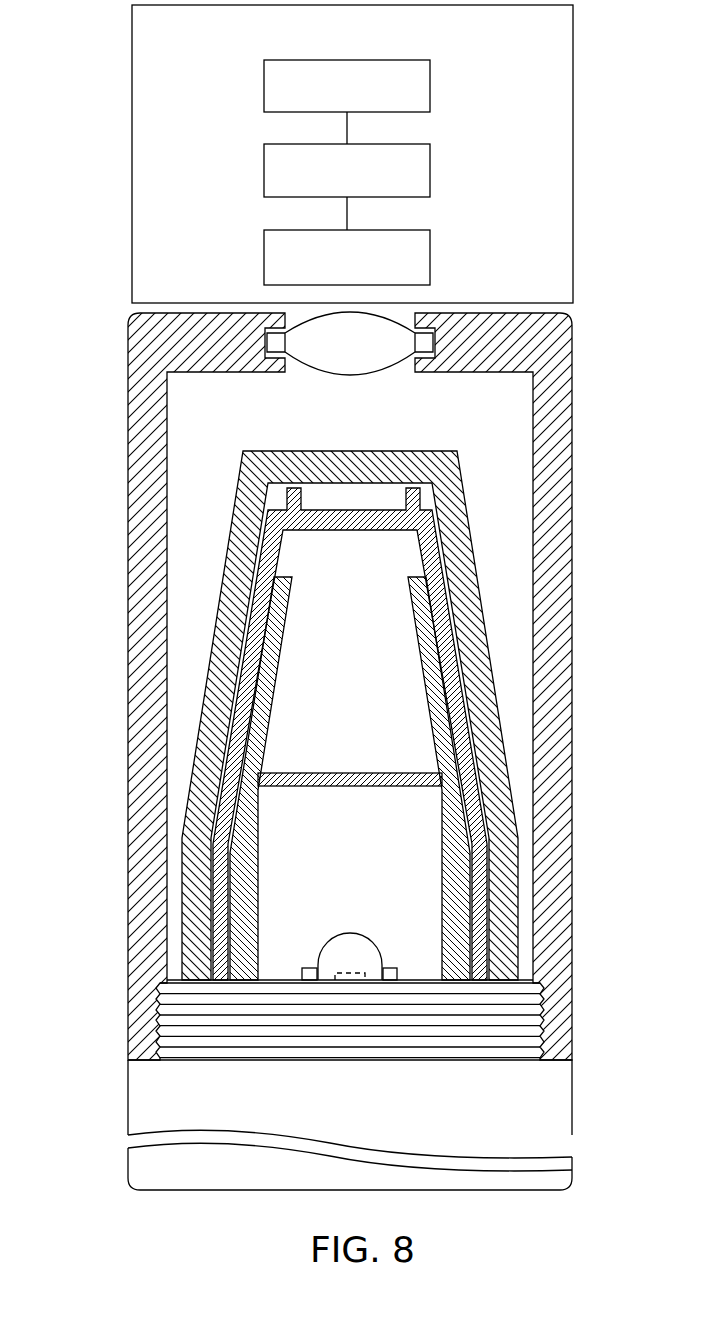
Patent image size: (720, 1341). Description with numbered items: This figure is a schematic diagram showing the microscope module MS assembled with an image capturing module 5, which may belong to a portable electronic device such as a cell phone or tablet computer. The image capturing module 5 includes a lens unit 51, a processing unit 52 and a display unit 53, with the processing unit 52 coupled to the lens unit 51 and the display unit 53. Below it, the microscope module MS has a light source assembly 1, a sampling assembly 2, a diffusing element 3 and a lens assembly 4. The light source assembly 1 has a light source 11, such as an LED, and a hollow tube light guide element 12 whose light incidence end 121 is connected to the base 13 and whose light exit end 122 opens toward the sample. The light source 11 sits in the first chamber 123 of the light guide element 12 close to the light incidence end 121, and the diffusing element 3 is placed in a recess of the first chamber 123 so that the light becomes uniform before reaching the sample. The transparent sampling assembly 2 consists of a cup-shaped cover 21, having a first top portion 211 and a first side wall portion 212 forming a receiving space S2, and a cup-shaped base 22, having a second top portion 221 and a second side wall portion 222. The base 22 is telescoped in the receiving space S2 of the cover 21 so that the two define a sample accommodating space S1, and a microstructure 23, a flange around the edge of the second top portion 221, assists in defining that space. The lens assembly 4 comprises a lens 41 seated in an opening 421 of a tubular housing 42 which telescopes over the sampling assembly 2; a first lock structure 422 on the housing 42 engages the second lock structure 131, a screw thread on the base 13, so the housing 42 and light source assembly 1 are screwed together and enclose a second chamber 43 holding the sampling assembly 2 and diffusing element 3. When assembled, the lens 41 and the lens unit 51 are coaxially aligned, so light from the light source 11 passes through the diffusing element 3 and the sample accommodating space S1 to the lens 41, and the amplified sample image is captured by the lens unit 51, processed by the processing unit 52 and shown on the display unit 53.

The light source assembly 1 is at (125, 1107).
The light source 11 is at (363, 953).
The light guide element 12 is at (438, 853).
The light incidence end 121 is at (248, 944).
The light exit end 122 is at (280, 590).
The first chamber 123 is at (320, 633).
The base 13 is at (547, 1137).
The second lock structure 131 is at (530, 1045).
The sampling assembly 2 is at (323, 413).
The cover 21 is at (270, 470).
The first top portion 211 is at (428, 456).
The first side wall portion 212 is at (240, 551).
The base 22 is at (311, 510).
The second top portion 221 is at (392, 522).
The second side wall portion 222 is at (452, 657).
The microstructure 23 is at (415, 498).
The diffusing element 3 is at (383, 773).
The lens assembly 4 is at (124, 661).
The lens 41 is at (351, 362).
The housing 42 is at (553, 502).
The opening 421 is at (408, 378).
The first lock structure 422 is at (540, 1022).
The second chamber 43 is at (511, 421).
The image capturing module 5 is at (309, 154).
The lens unit 51 is at (430, 248).
The processing unit 52 is at (430, 157).
The display unit 53 is at (430, 82).
The microscope module MS is at (100, 335).
The sample accommodating space S1 is at (357, 500).
The receiving space S2 is at (447, 576).